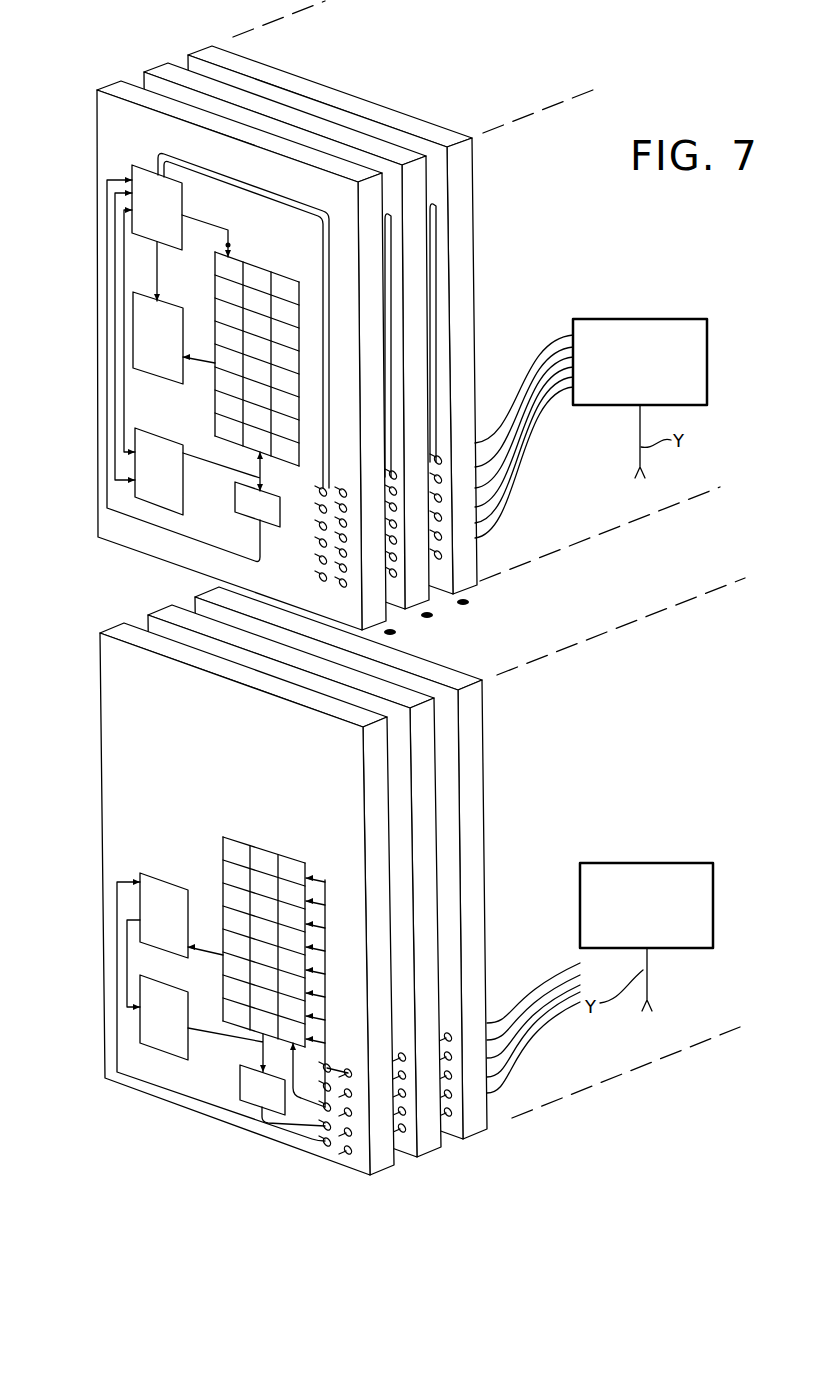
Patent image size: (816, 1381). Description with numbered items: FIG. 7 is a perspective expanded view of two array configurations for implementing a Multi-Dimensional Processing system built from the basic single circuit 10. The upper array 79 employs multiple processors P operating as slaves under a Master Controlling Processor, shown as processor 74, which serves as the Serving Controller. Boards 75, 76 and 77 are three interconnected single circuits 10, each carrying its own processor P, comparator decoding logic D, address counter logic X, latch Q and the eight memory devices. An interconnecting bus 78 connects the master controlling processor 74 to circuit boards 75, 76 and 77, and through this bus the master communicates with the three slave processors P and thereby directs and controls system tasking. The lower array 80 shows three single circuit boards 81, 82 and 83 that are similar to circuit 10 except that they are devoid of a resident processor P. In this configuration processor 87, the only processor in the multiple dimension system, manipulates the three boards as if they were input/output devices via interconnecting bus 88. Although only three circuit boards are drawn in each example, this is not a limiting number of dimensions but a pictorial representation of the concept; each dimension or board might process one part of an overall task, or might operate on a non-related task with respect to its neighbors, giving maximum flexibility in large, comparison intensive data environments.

The single circuit 10 is at (88, 204).
The master controlling processor 74 is at (638, 319).
The circuit board 75 is at (118, 81).
The circuit board 76 is at (167, 63).
The circuit board 77 is at (211, 46).
The interconnecting bus 78 is at (556, 440).
The array 79 is at (428, 100).
The array 80 is at (449, 668).
The single circuit board 81 is at (100, 630).
The single circuit board 82 is at (156, 612).
The single circuit board 83 is at (200, 598).
The processor 87 is at (647, 862).
The interconnecting bus 88 is at (537, 940).